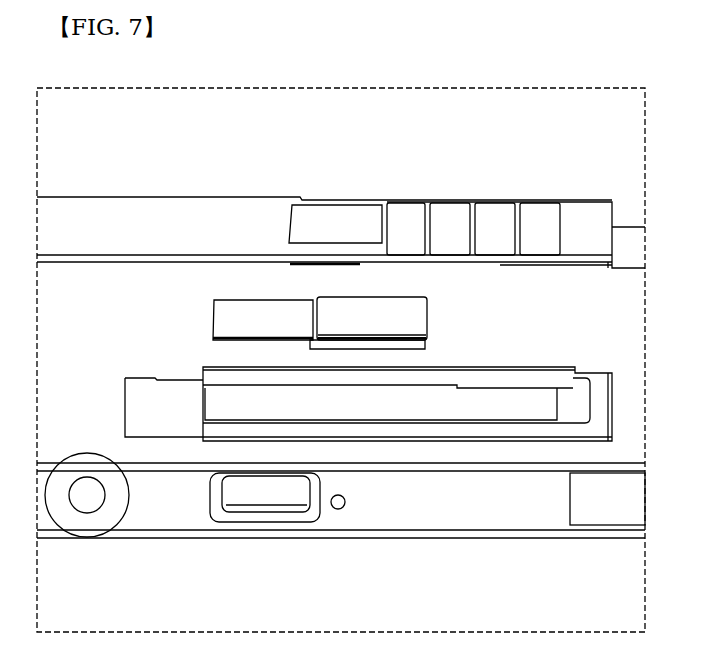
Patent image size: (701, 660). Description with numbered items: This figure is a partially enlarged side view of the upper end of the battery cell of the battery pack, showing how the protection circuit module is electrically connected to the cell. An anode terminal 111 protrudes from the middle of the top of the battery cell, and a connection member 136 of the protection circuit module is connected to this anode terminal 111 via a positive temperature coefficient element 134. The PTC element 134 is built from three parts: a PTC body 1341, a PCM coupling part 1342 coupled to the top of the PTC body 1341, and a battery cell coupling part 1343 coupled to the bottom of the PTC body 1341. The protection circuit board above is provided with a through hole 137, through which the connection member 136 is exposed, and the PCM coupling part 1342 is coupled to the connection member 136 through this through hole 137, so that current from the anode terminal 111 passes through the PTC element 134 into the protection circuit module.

The anode terminal 111 is at (273, 492).
The positive temperature coefficient (PTC) element 134 is at (324, 284).
The connection member 136 is at (352, 268).
The through hole 137 is at (327, 235).
The PTC body 1341 is at (425, 347).
The PCM coupling part 1342 is at (400, 318).
The battery cell coupling part 1343 is at (252, 328).